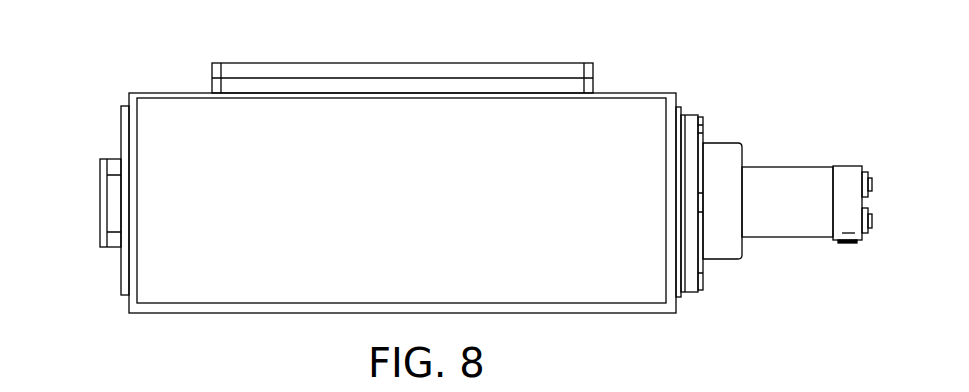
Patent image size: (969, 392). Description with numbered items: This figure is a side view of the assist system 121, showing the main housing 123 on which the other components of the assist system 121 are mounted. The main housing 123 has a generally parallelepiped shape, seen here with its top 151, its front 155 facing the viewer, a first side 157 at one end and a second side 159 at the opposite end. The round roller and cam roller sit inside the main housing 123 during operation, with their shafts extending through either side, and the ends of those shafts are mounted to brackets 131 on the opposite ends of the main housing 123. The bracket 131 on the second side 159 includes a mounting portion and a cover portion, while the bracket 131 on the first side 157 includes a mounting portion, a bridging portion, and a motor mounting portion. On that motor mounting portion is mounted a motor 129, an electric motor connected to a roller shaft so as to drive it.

The assist system 121 is at (454, 180).
The main housing 123 is at (186, 94).
The motor 129 is at (845, 158).
The bracket 131 is at (98, 190).
The top 151 is at (626, 87).
The front 155 is at (233, 287).
The first side 157 is at (695, 305).
The second side 159 is at (117, 105).